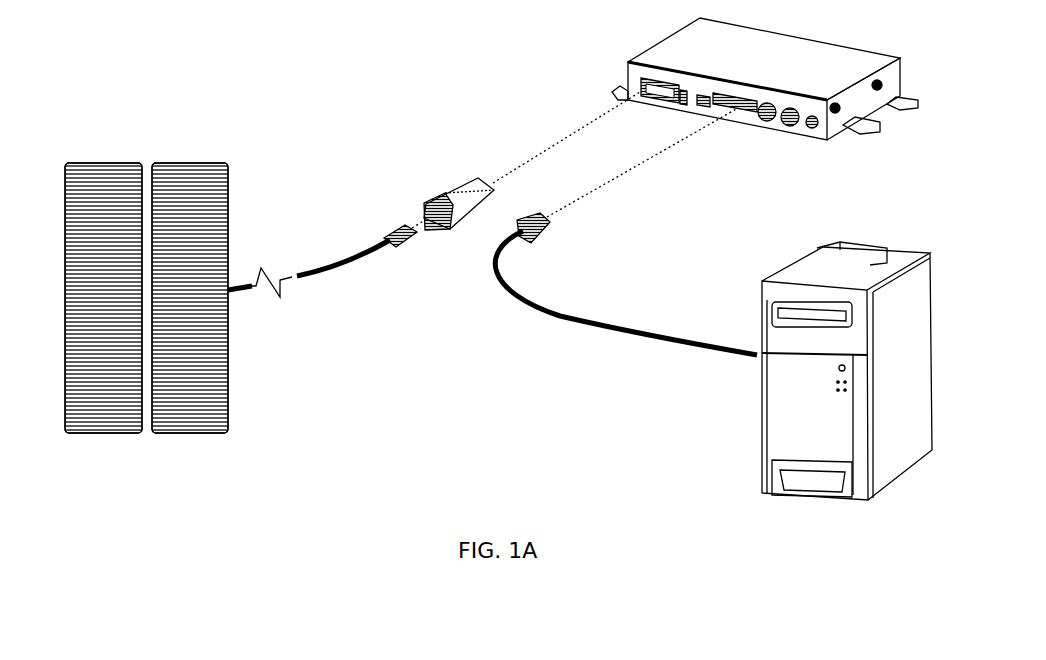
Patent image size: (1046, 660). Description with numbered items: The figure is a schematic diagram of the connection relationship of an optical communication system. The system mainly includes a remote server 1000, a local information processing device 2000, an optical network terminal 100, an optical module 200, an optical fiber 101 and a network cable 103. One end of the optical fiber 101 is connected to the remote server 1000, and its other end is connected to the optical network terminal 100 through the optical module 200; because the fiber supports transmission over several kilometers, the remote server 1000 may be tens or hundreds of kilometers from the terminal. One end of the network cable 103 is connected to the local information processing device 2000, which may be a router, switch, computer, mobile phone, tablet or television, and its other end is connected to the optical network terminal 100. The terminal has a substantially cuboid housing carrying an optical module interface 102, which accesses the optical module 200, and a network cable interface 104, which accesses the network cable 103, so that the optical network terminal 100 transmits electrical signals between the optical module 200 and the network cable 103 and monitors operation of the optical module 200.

The optical network terminal 100 is at (706, 103).
The optical fiber 101 is at (407, 247).
The optical module interface 102 is at (652, 102).
The network cable 103 is at (540, 230).
The network cable interface 104 is at (745, 112).
The optical module 200 is at (460, 184).
The remote server 1000 is at (197, 162).
The local information processing device 2000 is at (762, 410).